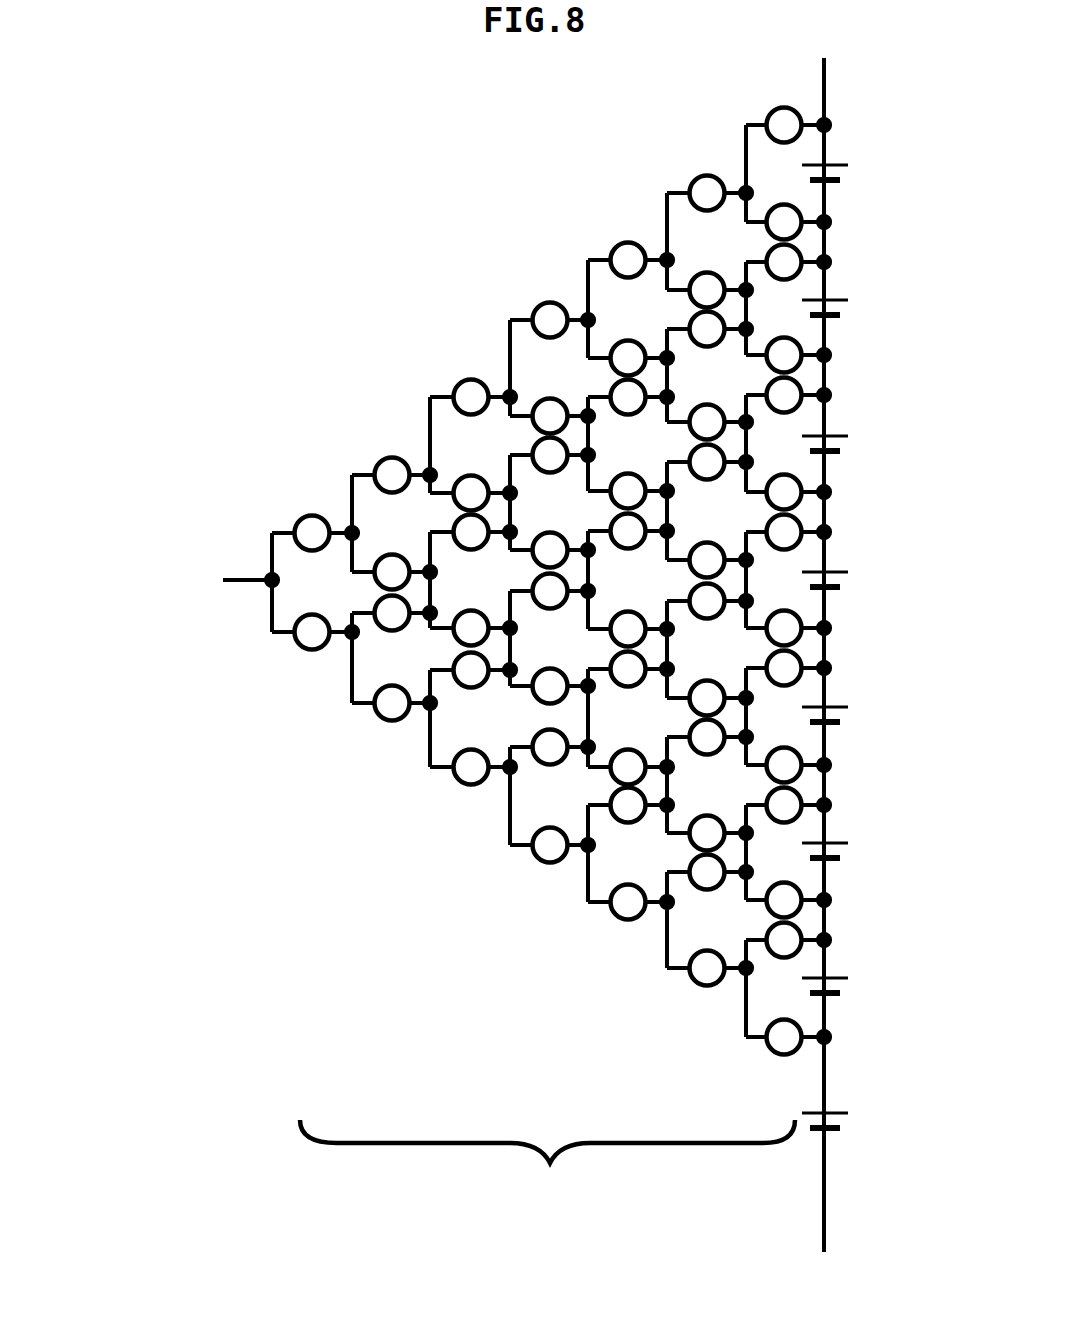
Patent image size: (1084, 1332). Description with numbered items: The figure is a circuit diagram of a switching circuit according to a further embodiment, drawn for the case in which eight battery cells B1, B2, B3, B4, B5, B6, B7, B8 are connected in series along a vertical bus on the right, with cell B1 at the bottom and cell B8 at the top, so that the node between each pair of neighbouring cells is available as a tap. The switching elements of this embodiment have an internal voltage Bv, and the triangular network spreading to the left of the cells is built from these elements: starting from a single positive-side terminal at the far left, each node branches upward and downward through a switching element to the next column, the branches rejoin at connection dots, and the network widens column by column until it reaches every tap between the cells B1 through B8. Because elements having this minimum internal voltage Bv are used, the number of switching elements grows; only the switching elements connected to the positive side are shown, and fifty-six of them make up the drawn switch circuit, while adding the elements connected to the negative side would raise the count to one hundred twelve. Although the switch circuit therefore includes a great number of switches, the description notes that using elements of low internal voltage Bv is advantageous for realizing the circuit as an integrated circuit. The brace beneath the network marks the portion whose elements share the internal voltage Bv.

The battery cell B1 is at (855, 1118).
The battery cell B2 is at (855, 983).
The battery cell B3 is at (855, 848).
The battery cell B4 is at (855, 712).
The battery cell B5 is at (855, 577).
The battery cell B6 is at (855, 441).
The battery cell B7 is at (855, 305).
The battery cell B8 is at (855, 170).
The internal voltage Bv is at (547, 1175).